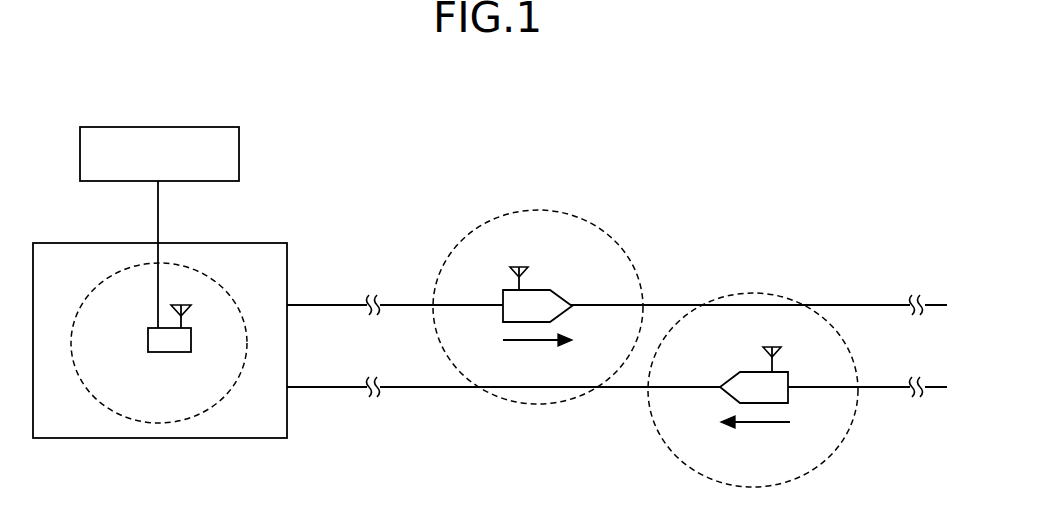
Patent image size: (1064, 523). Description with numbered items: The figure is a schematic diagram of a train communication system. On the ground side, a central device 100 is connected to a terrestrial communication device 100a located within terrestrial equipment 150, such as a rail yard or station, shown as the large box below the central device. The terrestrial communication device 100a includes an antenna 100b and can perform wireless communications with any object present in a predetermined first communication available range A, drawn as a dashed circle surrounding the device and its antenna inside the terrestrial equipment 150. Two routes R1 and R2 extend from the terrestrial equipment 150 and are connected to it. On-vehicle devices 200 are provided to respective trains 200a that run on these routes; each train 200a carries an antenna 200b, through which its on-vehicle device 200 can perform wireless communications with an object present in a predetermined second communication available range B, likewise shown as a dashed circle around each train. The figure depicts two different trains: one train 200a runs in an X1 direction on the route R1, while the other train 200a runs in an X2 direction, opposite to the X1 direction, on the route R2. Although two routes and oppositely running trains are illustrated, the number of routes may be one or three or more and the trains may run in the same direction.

The central device 100 is at (186, 127).
The terrestrial equipment 150 is at (224, 243).
The terrestrial communication device 100a is at (163, 352).
The antenna 100b is at (181, 305).
The on-vehicle device 200 is at (643, 317).
The train 200a is at (563, 299).
The antenna 200b is at (519, 267).
The first communication available range A is at (118, 415).
The second communication available range B is at (582, 218).
The route R1 is at (320, 304).
The route R2 is at (320, 386).
The X1 direction X1 is at (537, 353).
The X2 direction X2 is at (755, 435).